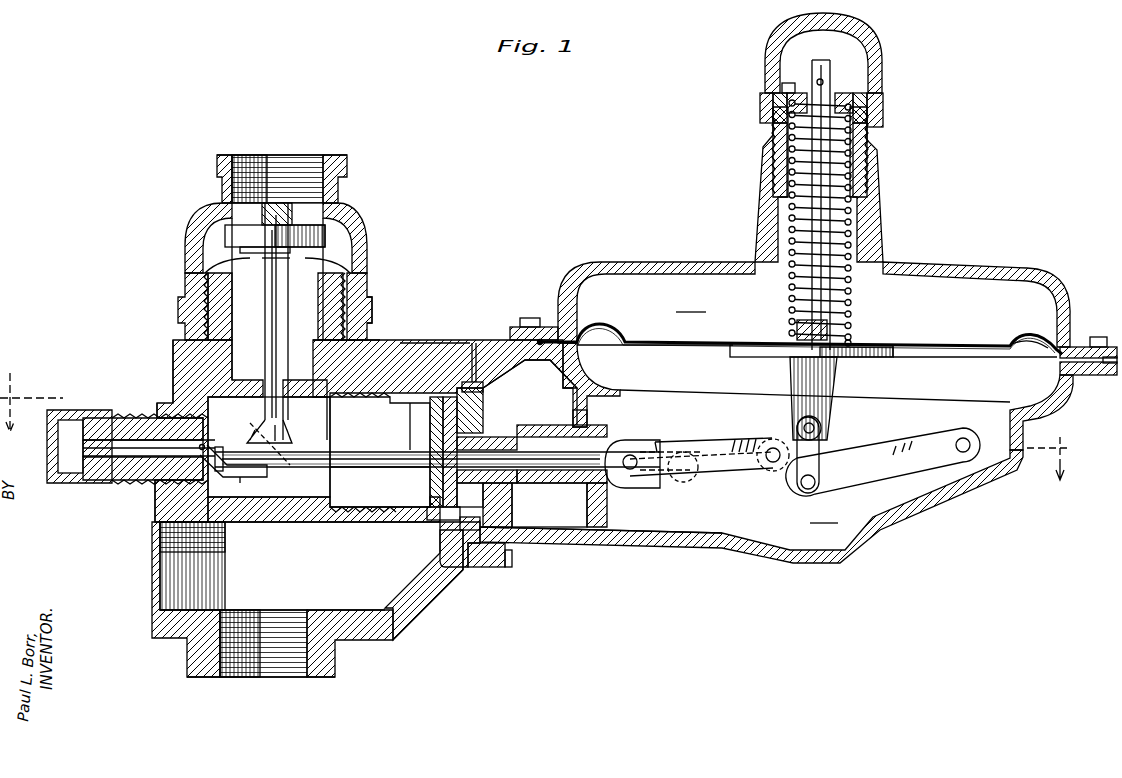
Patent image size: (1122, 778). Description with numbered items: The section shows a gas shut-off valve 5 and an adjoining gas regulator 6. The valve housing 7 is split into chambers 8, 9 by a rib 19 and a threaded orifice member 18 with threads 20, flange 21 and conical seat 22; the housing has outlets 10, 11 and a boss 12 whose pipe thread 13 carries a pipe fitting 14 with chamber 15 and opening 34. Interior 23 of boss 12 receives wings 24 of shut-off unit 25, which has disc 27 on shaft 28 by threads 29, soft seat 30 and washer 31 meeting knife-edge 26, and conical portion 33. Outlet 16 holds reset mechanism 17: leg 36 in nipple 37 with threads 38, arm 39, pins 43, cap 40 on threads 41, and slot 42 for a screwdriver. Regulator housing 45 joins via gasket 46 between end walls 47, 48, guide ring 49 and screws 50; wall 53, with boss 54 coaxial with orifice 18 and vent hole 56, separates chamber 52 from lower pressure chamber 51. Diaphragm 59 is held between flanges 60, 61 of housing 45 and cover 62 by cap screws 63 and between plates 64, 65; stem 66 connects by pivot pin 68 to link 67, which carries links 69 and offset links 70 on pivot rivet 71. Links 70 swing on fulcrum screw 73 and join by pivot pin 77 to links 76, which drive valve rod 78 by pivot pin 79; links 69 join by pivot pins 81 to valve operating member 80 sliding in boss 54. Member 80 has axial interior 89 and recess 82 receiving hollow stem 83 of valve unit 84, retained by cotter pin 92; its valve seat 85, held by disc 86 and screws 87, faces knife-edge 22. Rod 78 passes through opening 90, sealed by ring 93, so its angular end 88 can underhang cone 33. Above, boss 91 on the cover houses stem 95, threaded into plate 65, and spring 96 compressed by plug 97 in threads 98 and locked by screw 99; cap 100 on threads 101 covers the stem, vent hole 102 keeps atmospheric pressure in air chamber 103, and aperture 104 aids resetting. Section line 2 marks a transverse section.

The section line 2 is at (1056, 458).
The combined automatic high and low pressure gas shut-off valve 5 is at (133, 294).
The gas regulator 6 is at (913, 216).
The housing 7 is at (428, 617).
The chamber 8 is at (365, 600).
The chamber 9 is at (305, 525).
The outlet 10 is at (271, 688).
The outlet 11 is at (146, 594).
The boss member 12 is at (375, 338).
The pipe thread 13 is at (373, 310).
The pipe fitting 14 is at (300, 224).
The internal chamber 15 is at (367, 282).
The fourth outlet 16 is at (215, 420).
The reset mechanism 17 is at (97, 380).
The orifice member 18 is at (372, 420).
The internal rib portion 19 is at (278, 525).
The external threads 20 is at (365, 518).
The annular flange member 21 is at (412, 343).
The conical-shaped seat 22 is at (410, 410).
The cylindrical interior 23 is at (188, 349).
The wing portions 24 is at (183, 302).
The shut-off unit 25 is at (212, 225).
The cone-shaped seat 26 is at (215, 265).
The shut-off disc 27 is at (325, 233).
The shaft portion 28 is at (207, 286).
The threads 29 is at (318, 210).
The soft valve seat material 30 is at (290, 250).
The washer 31 is at (286, 266).
The frustro-conical-shaped portion 33 is at (297, 440).
The opening 34 is at (294, 147).
The leg member 36 is at (125, 481).
The pipe nipple 37 is at (142, 481).
The threads 38 is at (155, 515).
The reset arm 39 is at (250, 477).
The pipe cap 40 is at (60, 480).
The threads 41 is at (95, 481).
The slot 42 is at (78, 440).
The pins 43 is at (240, 445).
The housing 45 is at (706, 556).
The gasket 46 is at (482, 523).
The end wall 47 is at (468, 380).
The end wall 48 is at (475, 343).
The guide ring 49 is at (507, 372).
The screws 50 is at (512, 560).
The internal chamber portion 51 is at (824, 516).
The chamber portion 52 is at (525, 327).
The wall member 53 is at (605, 389).
The boss member 54 is at (598, 545).
The vent hole 56 is at (588, 417).
The diaphragm member 59 is at (1028, 338).
The flange member 60 is at (1078, 376).
The flange member 61 is at (1110, 376).
The cover 62 is at (934, 272).
The cap screws 63 is at (530, 318).
The upper diaphragm plate 64 is at (895, 342).
The lower diaphragm plate 65 is at (893, 355).
The stem member 66 is at (800, 372).
The link member 67 is at (825, 450).
The pivot pin 68 is at (818, 426).
The straight bar links 69 is at (750, 470).
The offset links 70 is at (880, 478).
The pivot rivet 71 is at (805, 487).
The fulcrum screw 73 is at (966, 440).
The straight bar links 76 is at (745, 443).
The pivot pin 77 is at (773, 448).
The valve rod 78 is at (380, 473).
The pivot pin 79 is at (688, 452).
The valve operating member 80 is at (640, 442).
The pivot pins 81 is at (635, 468).
The hollowed-out interior portion 82 is at (545, 425).
The stem portion 83 is at (470, 495).
The valve unit 84 is at (483, 407).
The valve seat 85 is at (443, 480).
The annular disc member 86 is at (428, 403).
The screws 87 is at (435, 520).
The angular end 88 is at (282, 470).
The axial interior portion 89 is at (530, 522).
The axial opening 90 is at (500, 437).
The spring housing 91 is at (880, 170).
The cotter pin 92 is at (468, 440).
The sealing ring 93 is at (437, 456).
The stem member 95 is at (795, 300).
The spring 96 is at (851, 295).
The plug member 97 is at (855, 96).
The internal threads 98 is at (868, 108).
The screw 99 is at (788, 88).
The cap member 100 is at (870, 35).
The external threads 101 is at (883, 121).
The vent hole 102 is at (775, 198).
The air chamber 103 is at (691, 304).
The aperture 104 is at (835, 72).